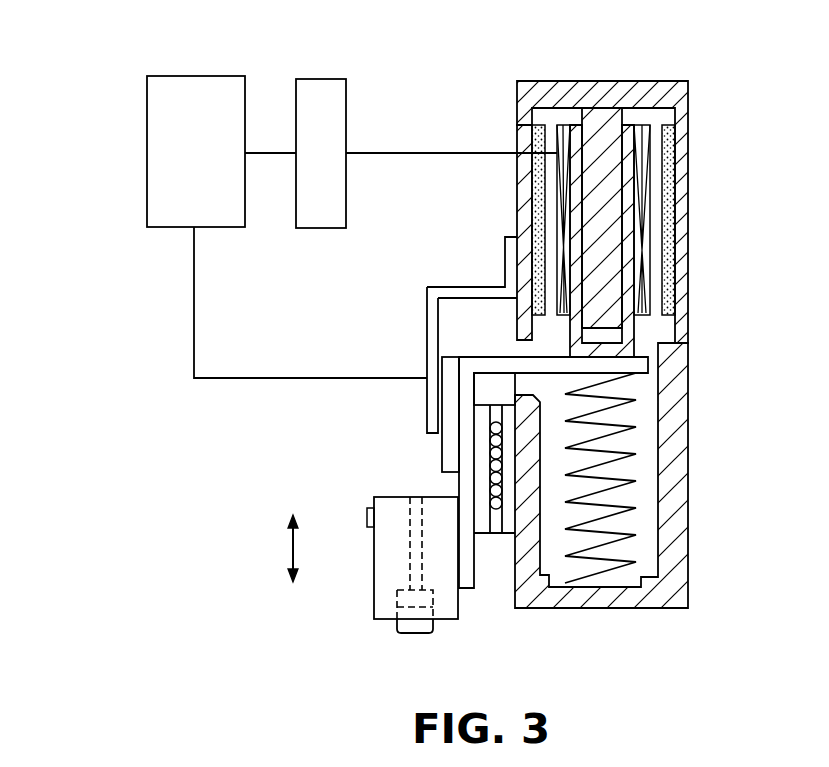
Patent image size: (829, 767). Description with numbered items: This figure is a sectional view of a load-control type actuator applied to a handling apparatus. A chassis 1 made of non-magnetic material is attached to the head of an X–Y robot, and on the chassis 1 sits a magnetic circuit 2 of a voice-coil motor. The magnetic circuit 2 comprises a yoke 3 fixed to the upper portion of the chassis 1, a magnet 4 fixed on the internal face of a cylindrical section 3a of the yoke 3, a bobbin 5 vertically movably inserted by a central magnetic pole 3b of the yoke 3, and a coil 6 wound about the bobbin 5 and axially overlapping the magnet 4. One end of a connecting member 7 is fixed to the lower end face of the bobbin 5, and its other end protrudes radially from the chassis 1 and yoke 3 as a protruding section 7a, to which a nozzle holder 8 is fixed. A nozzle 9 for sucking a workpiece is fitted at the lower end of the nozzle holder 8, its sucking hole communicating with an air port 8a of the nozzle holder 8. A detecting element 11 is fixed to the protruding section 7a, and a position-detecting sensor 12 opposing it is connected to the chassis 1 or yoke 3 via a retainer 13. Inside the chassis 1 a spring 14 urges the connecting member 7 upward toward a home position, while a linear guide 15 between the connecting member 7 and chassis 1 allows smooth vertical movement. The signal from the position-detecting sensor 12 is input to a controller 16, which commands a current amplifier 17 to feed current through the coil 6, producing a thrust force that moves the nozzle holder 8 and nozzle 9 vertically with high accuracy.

The chassis 1 is at (688, 435).
The magnetic circuit 2 is at (662, 211).
The yoke 3 is at (595, 189).
The cylindrical section 3a is at (517, 178).
The central magnetic pole 3b is at (603, 120).
The magnet 4 is at (642, 220).
The bobbin 5 is at (632, 175).
The coil 6 is at (650, 265).
The connecting member 7 is at (484, 357).
The protruding section 7a is at (437, 418).
The nozzle holder 8 is at (383, 588).
The air port 8a is at (405, 535).
The nozzle 9 is at (412, 628).
The detecting element 11 is at (443, 440).
The position-detecting sensor 12 is at (427, 397).
The retainer 13 is at (470, 286).
The spring 14 is at (622, 527).
The linear guide 15 is at (495, 513).
The controller 16 is at (185, 206).
The current amplifier 17 is at (312, 96).